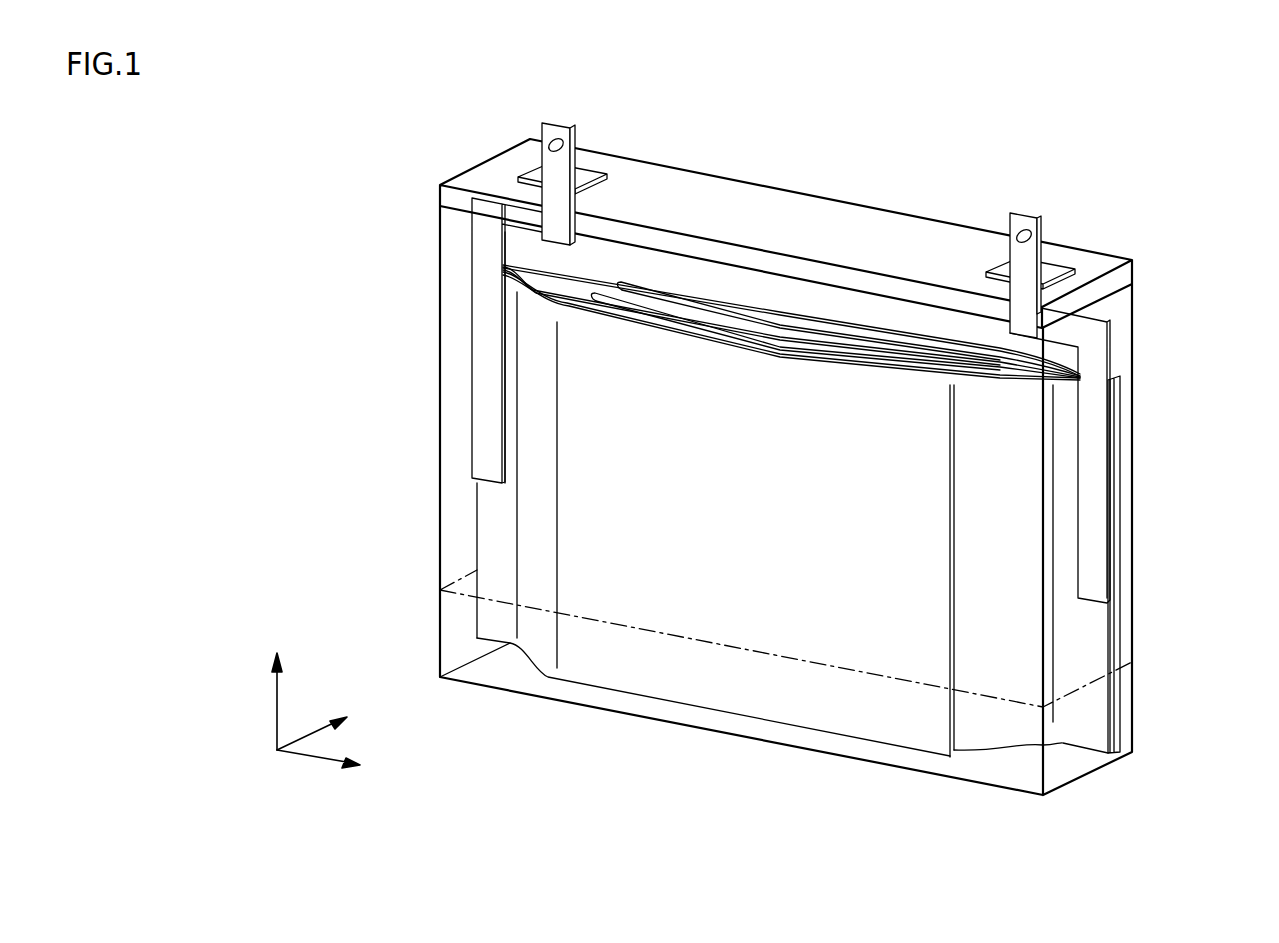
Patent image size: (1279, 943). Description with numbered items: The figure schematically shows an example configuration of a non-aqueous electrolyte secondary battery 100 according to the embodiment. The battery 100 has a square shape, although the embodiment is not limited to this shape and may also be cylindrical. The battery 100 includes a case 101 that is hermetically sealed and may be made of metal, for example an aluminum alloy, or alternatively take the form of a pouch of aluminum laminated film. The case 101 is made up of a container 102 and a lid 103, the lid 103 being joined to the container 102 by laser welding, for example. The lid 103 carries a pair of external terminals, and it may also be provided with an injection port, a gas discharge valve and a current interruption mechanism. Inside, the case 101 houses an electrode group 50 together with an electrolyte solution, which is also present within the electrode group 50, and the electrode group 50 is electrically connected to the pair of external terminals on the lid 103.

The battery 100 is at (941, 133).
The case 101 is at (1217, 263).
The container 102 is at (1134, 316).
The lid 103 is at (1134, 272).
The electrode group 50 is at (573, 473).